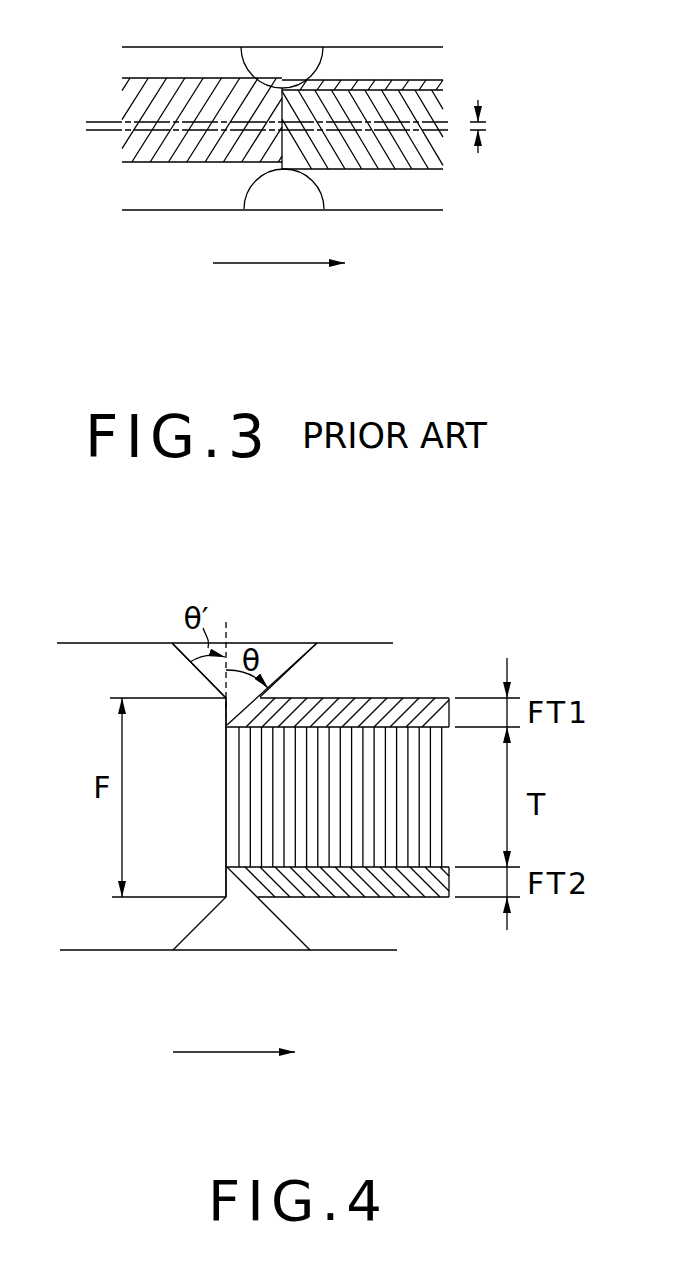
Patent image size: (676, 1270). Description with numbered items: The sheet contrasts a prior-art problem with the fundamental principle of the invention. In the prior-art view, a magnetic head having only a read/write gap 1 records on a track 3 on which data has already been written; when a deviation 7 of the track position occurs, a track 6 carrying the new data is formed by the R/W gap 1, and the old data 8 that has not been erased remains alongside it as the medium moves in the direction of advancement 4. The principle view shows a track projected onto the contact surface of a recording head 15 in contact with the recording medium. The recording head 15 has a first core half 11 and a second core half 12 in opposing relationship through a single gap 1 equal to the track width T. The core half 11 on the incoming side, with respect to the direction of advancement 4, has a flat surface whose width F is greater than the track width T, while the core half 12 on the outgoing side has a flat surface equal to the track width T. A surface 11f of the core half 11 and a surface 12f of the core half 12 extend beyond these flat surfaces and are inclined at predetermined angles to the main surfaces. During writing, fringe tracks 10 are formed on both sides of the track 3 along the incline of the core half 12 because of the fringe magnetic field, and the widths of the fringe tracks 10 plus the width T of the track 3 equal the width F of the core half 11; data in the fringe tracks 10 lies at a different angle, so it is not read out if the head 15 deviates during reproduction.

In FIG. 3, the read/write gap 1 is at (284, 152).
In FIG. 4, the read/write gap 1 is at (227, 820).
In FIG. 3, the track 3 is at (134, 108).
In FIG. 4, the track 3 is at (432, 851).
In FIG. 3, the direction of advancement 4 is at (257, 268).
In FIG. 4, the direction of advancement 4 is at (206, 1053).
In FIG. 3, the track on which new data has been recorded 6 is at (436, 153).
In FIG. 3, the deviation 7 is at (488, 126).
In FIG. 3, the old data 8 is at (422, 82).
In FIG. 4, the fringe tracks 10 is at (423, 698).
In FIG. 4, the first core half 11 is at (110, 935).
In FIG. 4, the inclined surface of first core half 11f is at (194, 666).
In FIG. 4, the second core half 12 is at (360, 938).
In FIG. 4, the inclined surface of second core half 12f is at (300, 658).
In FIG. 4, the recording head 15 is at (70, 652).